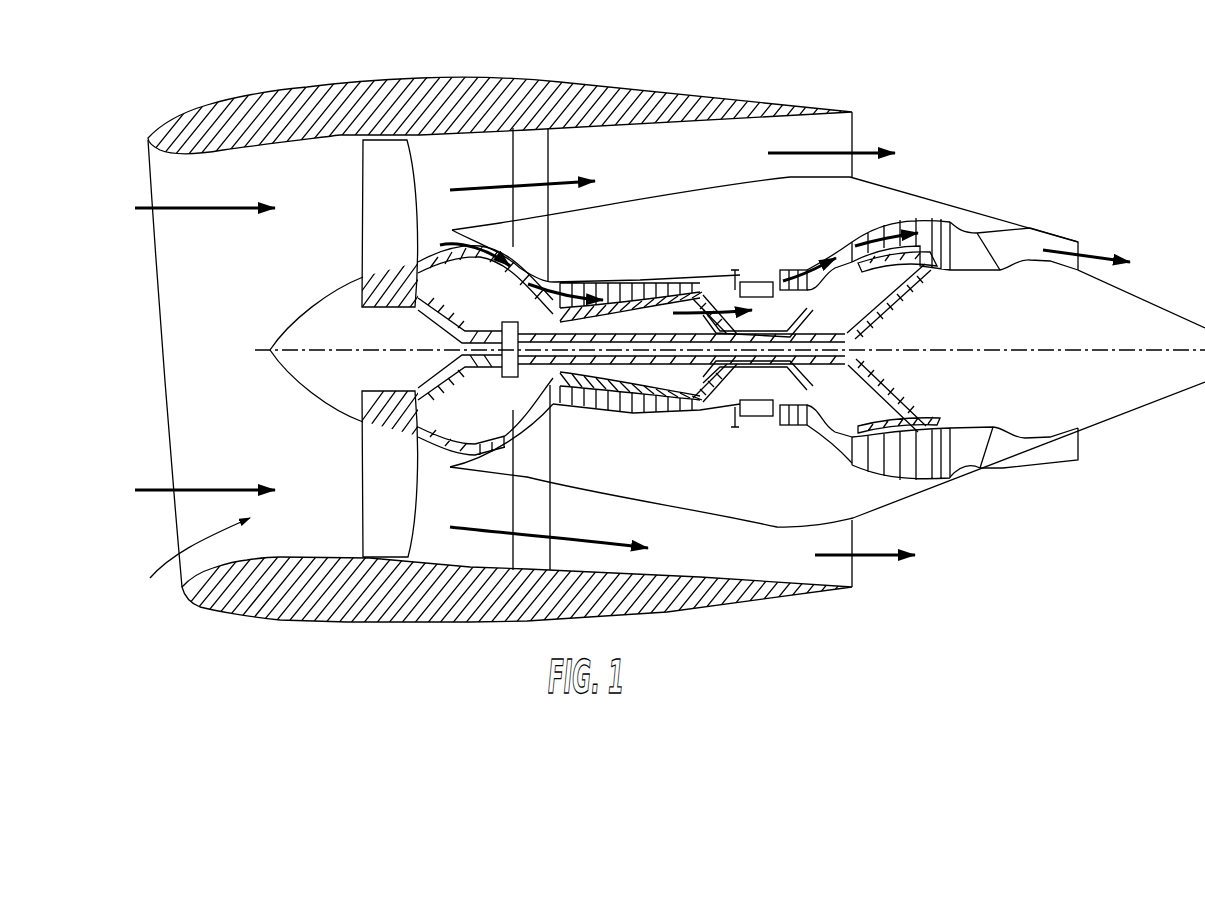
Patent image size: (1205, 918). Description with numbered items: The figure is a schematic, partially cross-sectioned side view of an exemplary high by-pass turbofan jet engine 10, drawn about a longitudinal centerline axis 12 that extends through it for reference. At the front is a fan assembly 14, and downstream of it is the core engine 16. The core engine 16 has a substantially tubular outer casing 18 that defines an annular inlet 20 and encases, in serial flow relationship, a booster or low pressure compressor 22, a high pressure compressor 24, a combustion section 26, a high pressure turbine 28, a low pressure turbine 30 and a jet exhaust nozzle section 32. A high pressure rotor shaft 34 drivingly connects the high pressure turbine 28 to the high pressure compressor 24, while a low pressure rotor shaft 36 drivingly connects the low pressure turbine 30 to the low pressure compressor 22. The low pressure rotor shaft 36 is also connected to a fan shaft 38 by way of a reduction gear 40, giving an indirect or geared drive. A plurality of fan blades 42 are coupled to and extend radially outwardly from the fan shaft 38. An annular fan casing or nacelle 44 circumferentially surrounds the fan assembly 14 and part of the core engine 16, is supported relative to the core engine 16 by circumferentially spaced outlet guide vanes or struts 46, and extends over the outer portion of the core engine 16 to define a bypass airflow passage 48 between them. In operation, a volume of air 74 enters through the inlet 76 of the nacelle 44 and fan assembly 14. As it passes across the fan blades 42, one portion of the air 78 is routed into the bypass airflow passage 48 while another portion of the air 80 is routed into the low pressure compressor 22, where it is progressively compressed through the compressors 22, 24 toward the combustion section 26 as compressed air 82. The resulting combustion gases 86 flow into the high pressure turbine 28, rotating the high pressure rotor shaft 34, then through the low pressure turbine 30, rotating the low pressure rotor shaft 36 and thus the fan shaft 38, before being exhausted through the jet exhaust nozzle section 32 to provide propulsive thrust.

The high by-pass turbofan jet engine 10 is at (995, 97).
The longitudinal centerline axis 12 is at (1020, 348).
The fan assembly 14 is at (435, 150).
The core engine 16 is at (747, 168).
The outer casing 18 is at (707, 517).
The annular inlet 20 is at (453, 455).
The low pressure compressor 22 is at (510, 423).
The high pressure compressor 24 is at (580, 407).
The combustion section 26 is at (745, 413).
The high pressure turbine 28 is at (810, 411).
The low pressure turbine 30 is at (937, 488).
The jet exhaust nozzle section 32 is at (999, 462).
The high pressure rotor shaft 34 is at (790, 318).
The low pressure rotor shaft 36 is at (892, 303).
The fan shaft 38 is at (420, 313).
The reduction gear 40 is at (507, 316).
The fan blades 42 is at (375, 178).
The nacelle 44 is at (368, 82).
The outlet guide vanes or struts 46 is at (537, 158).
The bypass airflow passage 48 is at (752, 349).
The air 74 is at (185, 208).
The inlet 76 is at (187, 560).
The bypass air 78 is at (502, 183).
The core air 80 is at (455, 242).
The compressed air 82 is at (553, 282).
The combustion gases 86 is at (882, 238).